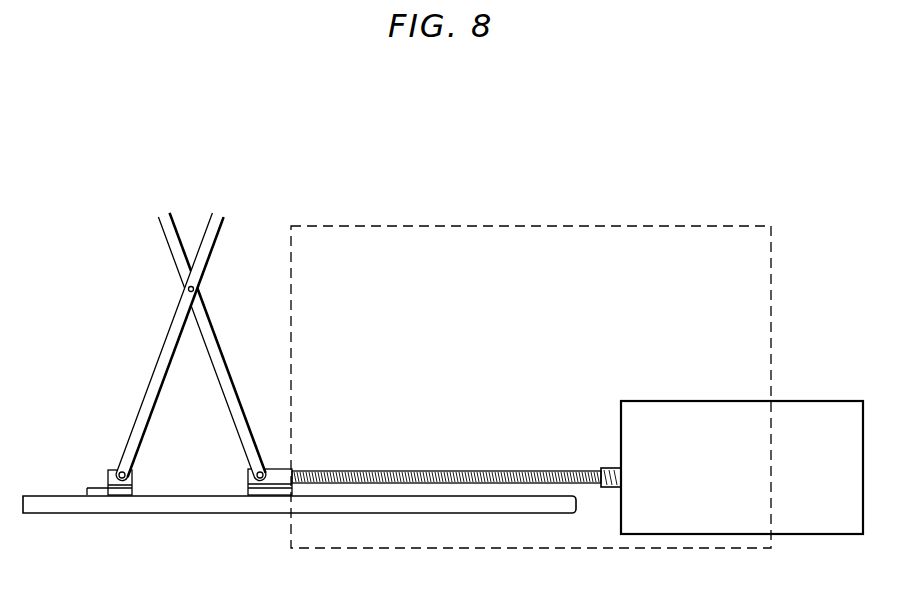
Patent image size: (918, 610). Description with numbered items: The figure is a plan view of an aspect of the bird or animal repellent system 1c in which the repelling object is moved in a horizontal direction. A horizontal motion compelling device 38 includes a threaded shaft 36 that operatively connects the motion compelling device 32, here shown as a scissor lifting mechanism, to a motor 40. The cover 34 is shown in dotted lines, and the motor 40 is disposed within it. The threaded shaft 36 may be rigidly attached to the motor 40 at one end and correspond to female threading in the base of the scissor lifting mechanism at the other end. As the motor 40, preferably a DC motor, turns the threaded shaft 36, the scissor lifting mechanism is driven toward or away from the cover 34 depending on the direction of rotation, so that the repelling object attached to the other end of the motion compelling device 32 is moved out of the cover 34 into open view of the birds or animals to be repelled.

The bird or animal repellent system 1c is at (470, 132).
The motion compelling device 32 is at (218, 282).
The cover 34 is at (525, 226).
The threaded shaft 36 is at (418, 470).
The horizontal motion compelling device 38 is at (266, 528).
The motor 40 is at (675, 400).